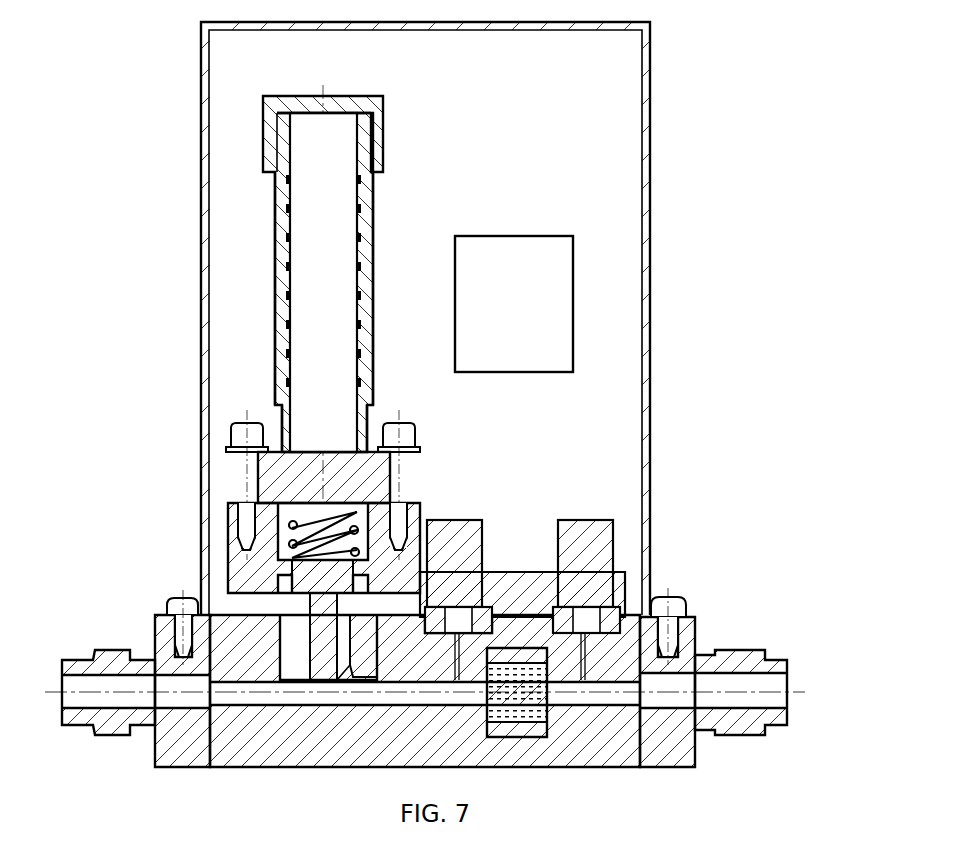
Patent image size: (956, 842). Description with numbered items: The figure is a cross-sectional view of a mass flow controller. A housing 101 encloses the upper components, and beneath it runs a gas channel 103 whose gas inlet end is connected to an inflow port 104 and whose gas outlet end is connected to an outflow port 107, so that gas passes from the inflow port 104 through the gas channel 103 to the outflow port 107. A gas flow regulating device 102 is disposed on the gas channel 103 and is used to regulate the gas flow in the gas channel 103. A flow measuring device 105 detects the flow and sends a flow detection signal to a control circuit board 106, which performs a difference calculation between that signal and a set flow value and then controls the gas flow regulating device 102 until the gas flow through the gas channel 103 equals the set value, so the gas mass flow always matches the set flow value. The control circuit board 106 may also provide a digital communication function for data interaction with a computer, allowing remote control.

The housing 101 is at (233, 167).
The gas flow regulating device 102 is at (312, 362).
The gas channel 103 is at (265, 737).
The inflow port 104 is at (167, 665).
The flow measuring device 105 is at (573, 538).
The control circuit board 106 is at (500, 295).
The outflow port 107 is at (738, 663).